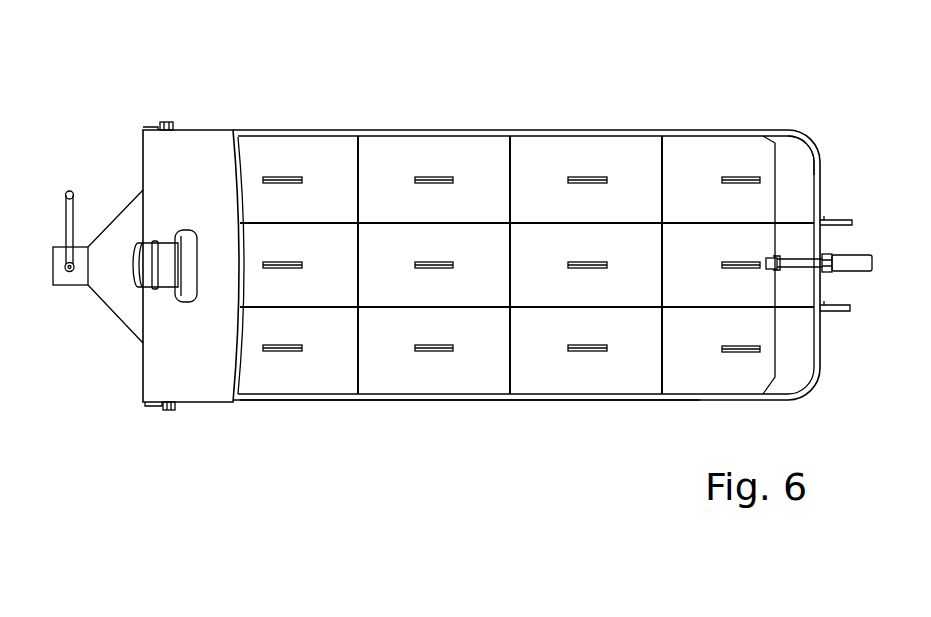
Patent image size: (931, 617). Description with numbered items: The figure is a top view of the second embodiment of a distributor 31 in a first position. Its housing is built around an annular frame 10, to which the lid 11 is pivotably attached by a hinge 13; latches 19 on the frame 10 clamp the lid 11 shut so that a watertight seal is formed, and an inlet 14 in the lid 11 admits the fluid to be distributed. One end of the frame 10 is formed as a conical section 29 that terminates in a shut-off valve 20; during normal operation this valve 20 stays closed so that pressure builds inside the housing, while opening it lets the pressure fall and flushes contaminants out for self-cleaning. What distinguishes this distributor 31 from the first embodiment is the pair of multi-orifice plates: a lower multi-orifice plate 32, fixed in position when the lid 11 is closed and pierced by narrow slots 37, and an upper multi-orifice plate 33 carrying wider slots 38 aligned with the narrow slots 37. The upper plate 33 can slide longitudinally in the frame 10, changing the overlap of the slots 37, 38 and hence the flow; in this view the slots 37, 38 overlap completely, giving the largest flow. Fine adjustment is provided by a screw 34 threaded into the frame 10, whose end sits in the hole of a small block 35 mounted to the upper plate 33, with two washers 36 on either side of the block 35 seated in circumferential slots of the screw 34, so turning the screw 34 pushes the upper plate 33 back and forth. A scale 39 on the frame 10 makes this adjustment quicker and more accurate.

The annular frame 10 is at (387, 400).
The lid 11 is at (208, 147).
The hinge 13 is at (161, 120).
The inlet 14 is at (173, 228).
The latches 19 is at (832, 313).
The shut-off valve 20 is at (62, 287).
The conical section 29 is at (123, 228).
The second embodiment of a distributor 31 is at (587, 82).
The lower multi-orifice plate 32 is at (793, 155).
The upper multi-orifice plate 33 is at (698, 150).
The screw 34 is at (832, 255).
The small block 35 is at (768, 268).
The washers 36 is at (777, 257).
The narrow slots 37 is at (447, 177).
The wider slots 38 is at (427, 177).
The scale 39 is at (847, 268).